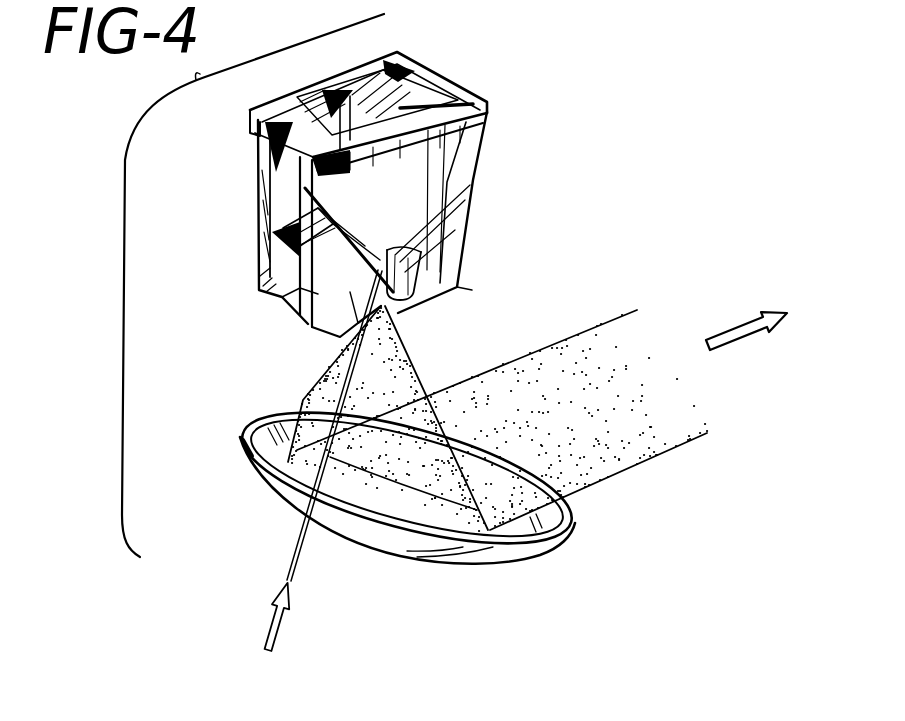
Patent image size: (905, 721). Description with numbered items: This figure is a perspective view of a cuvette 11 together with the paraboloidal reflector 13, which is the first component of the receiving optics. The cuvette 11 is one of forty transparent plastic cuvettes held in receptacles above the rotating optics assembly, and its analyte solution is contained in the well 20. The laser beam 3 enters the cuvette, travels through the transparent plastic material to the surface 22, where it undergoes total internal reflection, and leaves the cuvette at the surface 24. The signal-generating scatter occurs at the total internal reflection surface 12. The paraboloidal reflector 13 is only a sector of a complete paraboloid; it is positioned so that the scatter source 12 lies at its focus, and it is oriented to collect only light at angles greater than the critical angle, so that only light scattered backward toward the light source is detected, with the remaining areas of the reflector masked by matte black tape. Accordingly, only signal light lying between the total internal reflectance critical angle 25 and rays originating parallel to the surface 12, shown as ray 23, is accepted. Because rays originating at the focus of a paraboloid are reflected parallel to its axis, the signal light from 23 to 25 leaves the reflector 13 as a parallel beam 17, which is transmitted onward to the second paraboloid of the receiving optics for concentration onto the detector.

The laser beam 3 is at (291, 546).
The cuvette 11 is at (490, 164).
The total internal reflection surface 12 is at (420, 251).
The paraboloidal reflector 13 is at (497, 554).
The beam 17 is at (576, 336).
The well 20 is at (403, 160).
The surface 22 is at (393, 50).
The ray originating parallel to surface 12 23 is at (412, 368).
The surface 24 is at (303, 212).
The total internal reflectance critical angle 25 is at (316, 370).